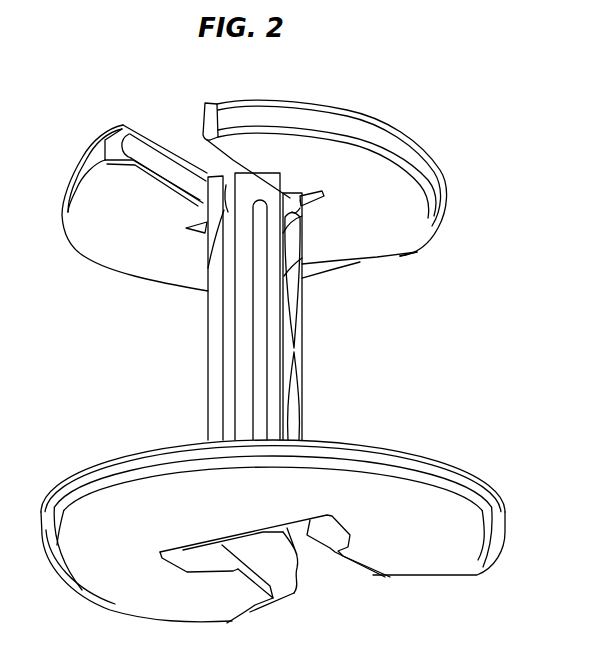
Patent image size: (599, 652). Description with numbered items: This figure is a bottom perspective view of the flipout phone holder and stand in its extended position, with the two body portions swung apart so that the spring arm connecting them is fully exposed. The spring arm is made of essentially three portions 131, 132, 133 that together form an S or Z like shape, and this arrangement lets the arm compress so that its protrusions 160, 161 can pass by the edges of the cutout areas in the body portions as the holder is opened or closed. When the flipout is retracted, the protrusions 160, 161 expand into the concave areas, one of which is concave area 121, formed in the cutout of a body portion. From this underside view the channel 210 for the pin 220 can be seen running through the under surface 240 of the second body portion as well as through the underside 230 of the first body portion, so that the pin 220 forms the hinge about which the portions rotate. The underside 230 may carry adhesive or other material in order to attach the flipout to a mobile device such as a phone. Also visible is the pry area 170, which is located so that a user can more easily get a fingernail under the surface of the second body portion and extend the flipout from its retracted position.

The concave area 121 is at (157, 163).
The first portion of spring arm 131 is at (213, 337).
The second portion of spring arm 132 is at (245, 370).
The third portion of spring arm 133 is at (273, 300).
The protrusion 160 is at (293, 393).
The protrusion 161 is at (293, 293).
The pry area 170 is at (353, 259).
The channel 210 is at (313, 202).
The pin 220 is at (207, 215).
The underside of body portion 230 is at (438, 560).
The under surface of body portion 240 is at (422, 222).